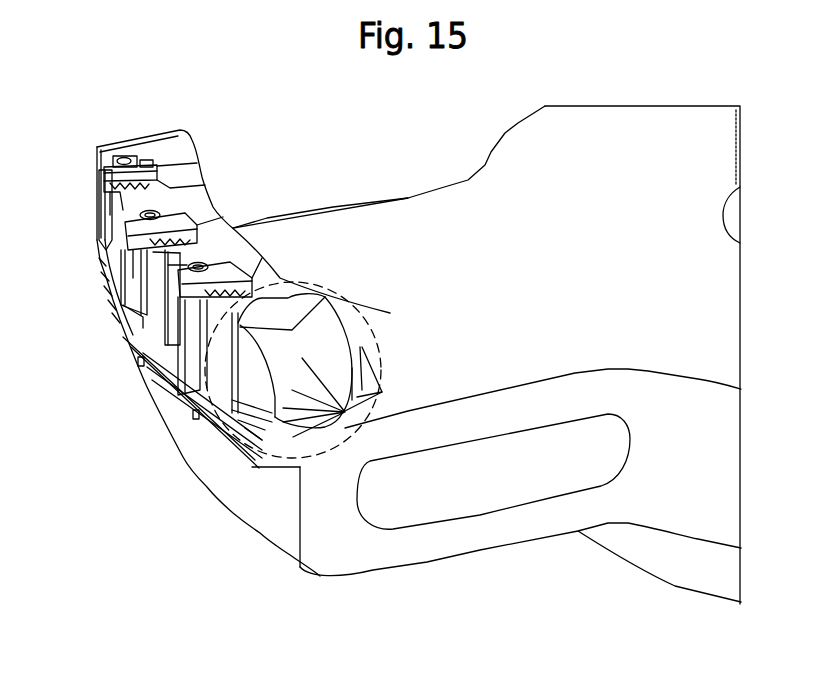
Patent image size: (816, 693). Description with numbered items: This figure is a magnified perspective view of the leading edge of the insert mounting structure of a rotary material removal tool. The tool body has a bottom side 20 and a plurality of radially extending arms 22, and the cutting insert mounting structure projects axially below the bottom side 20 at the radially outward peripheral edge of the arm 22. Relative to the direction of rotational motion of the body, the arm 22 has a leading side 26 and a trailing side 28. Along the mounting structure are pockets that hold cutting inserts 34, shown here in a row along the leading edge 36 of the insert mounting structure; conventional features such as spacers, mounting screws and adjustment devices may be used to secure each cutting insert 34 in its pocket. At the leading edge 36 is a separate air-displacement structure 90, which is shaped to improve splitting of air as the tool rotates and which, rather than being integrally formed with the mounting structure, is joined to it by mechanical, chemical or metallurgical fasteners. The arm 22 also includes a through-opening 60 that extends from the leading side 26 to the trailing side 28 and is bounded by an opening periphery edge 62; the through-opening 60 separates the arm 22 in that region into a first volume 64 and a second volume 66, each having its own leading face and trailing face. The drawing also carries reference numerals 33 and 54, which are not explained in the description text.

The bottom side 20 is at (625, 122).
The radially extending arm 22 is at (509, 270).
The leading side 26 is at (350, 556).
The trailing side 28 is at (364, 190).
The curved side wall 33 is at (283, 251).
The cutting insert 34 is at (97, 175).
The leading edge 36 is at (380, 315).
The terminal mounting rail 54 is at (130, 228).
The through-opening 60 is at (546, 503).
The opening periphery edge 62 is at (425, 526).
The first volume 64 is at (480, 529).
The second volume 66 is at (523, 409).
The separate air-displacement structure 90 is at (336, 349).